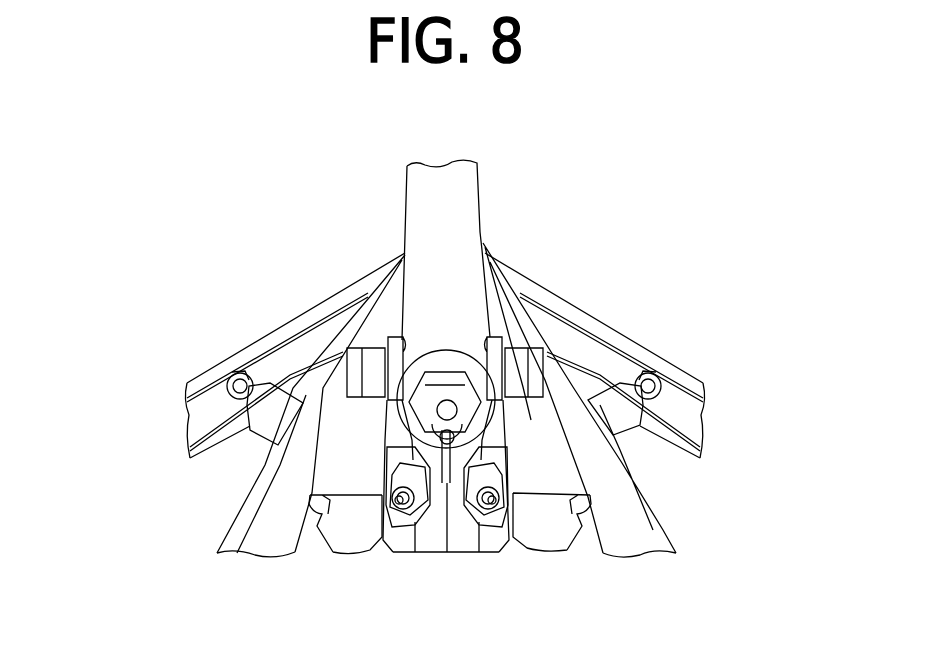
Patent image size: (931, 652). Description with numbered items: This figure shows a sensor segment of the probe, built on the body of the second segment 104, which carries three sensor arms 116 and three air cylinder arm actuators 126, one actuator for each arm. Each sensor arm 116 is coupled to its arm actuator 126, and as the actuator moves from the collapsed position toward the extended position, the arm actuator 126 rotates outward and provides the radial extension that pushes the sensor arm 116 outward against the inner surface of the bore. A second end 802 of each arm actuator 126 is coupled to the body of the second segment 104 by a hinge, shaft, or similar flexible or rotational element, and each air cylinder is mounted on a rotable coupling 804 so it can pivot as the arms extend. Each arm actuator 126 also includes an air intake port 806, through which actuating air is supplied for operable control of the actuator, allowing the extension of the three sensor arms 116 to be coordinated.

The second segment 104 is at (626, 528).
The sensor arm 116 is at (333, 292).
The arm actuator 126 is at (481, 199).
The second end 802 is at (407, 437).
The rotable coupling 804 is at (378, 350).
The air intake port 806 is at (403, 540).